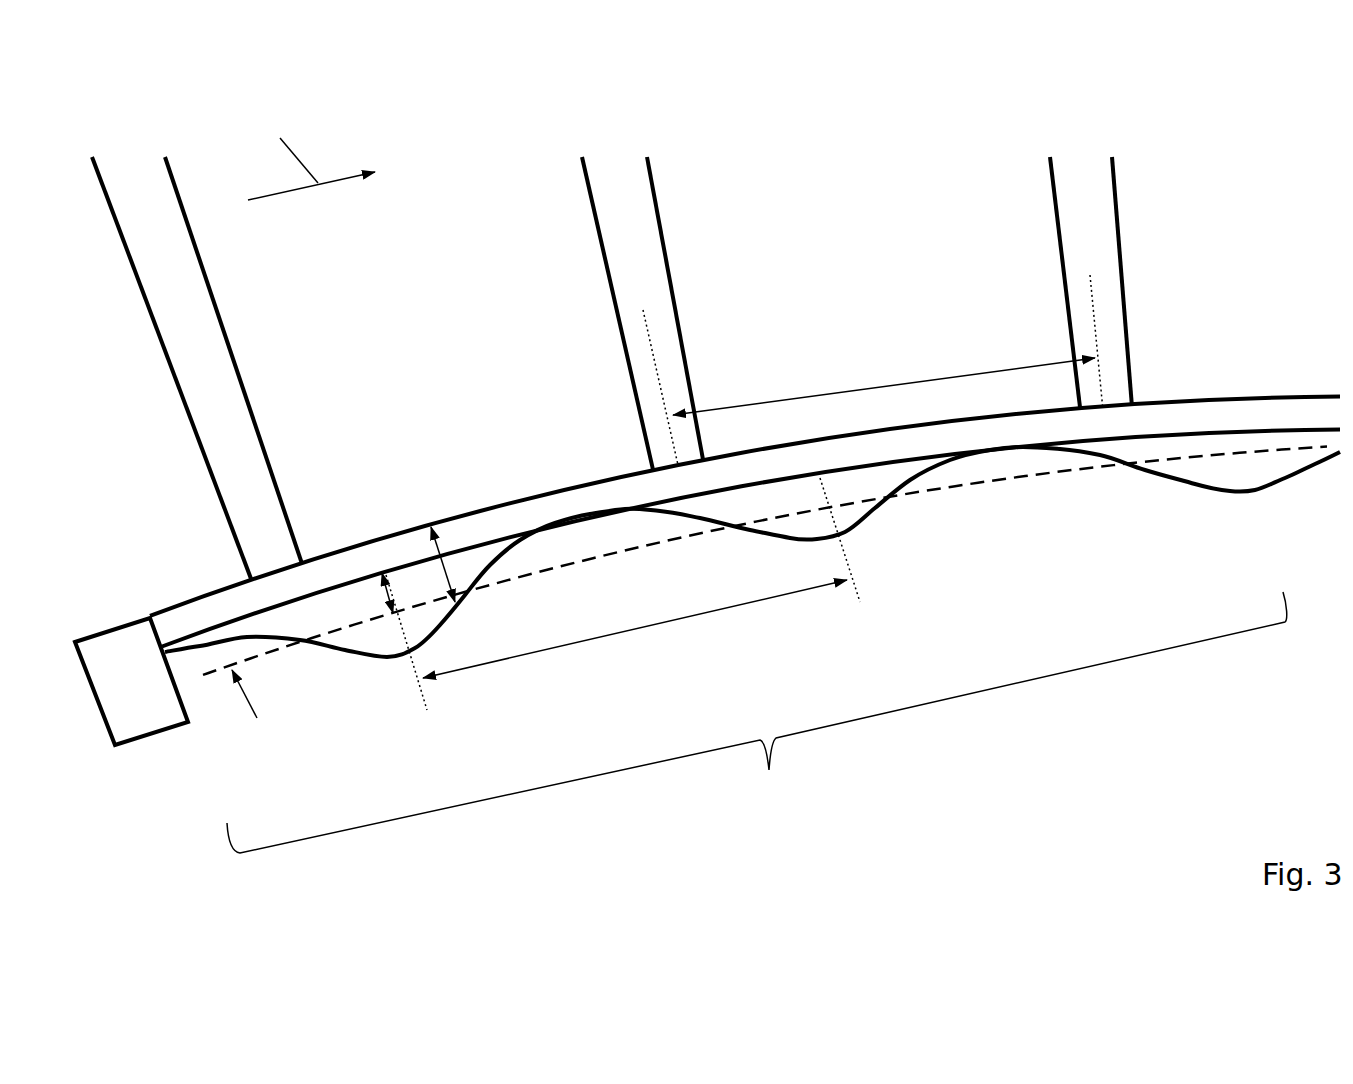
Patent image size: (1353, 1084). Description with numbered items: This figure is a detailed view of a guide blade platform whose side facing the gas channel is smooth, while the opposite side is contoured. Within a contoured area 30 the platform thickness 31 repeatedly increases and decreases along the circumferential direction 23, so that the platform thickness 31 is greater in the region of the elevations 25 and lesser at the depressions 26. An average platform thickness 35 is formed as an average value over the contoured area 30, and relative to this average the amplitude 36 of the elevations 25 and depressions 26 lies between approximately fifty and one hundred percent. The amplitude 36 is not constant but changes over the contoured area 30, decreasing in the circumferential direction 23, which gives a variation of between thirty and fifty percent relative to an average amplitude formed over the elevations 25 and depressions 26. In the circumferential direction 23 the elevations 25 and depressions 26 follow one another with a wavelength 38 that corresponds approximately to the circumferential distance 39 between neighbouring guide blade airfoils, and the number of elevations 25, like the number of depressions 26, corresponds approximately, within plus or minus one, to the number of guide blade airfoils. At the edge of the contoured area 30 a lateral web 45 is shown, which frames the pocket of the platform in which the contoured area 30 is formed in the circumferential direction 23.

The circumferential direction 23 is at (311, 153).
The elevations 25 is at (332, 665).
The depressions 26 is at (657, 577).
The contoured area 30 is at (757, 722).
The platform thickness 31 is at (441, 563).
The average platform thickness 35 is at (198, 588).
The amplitude 36 is at (390, 605).
The wavelength 38 is at (570, 648).
The circumferential distance 39 is at (822, 393).
The lateral webs 45 is at (140, 707).